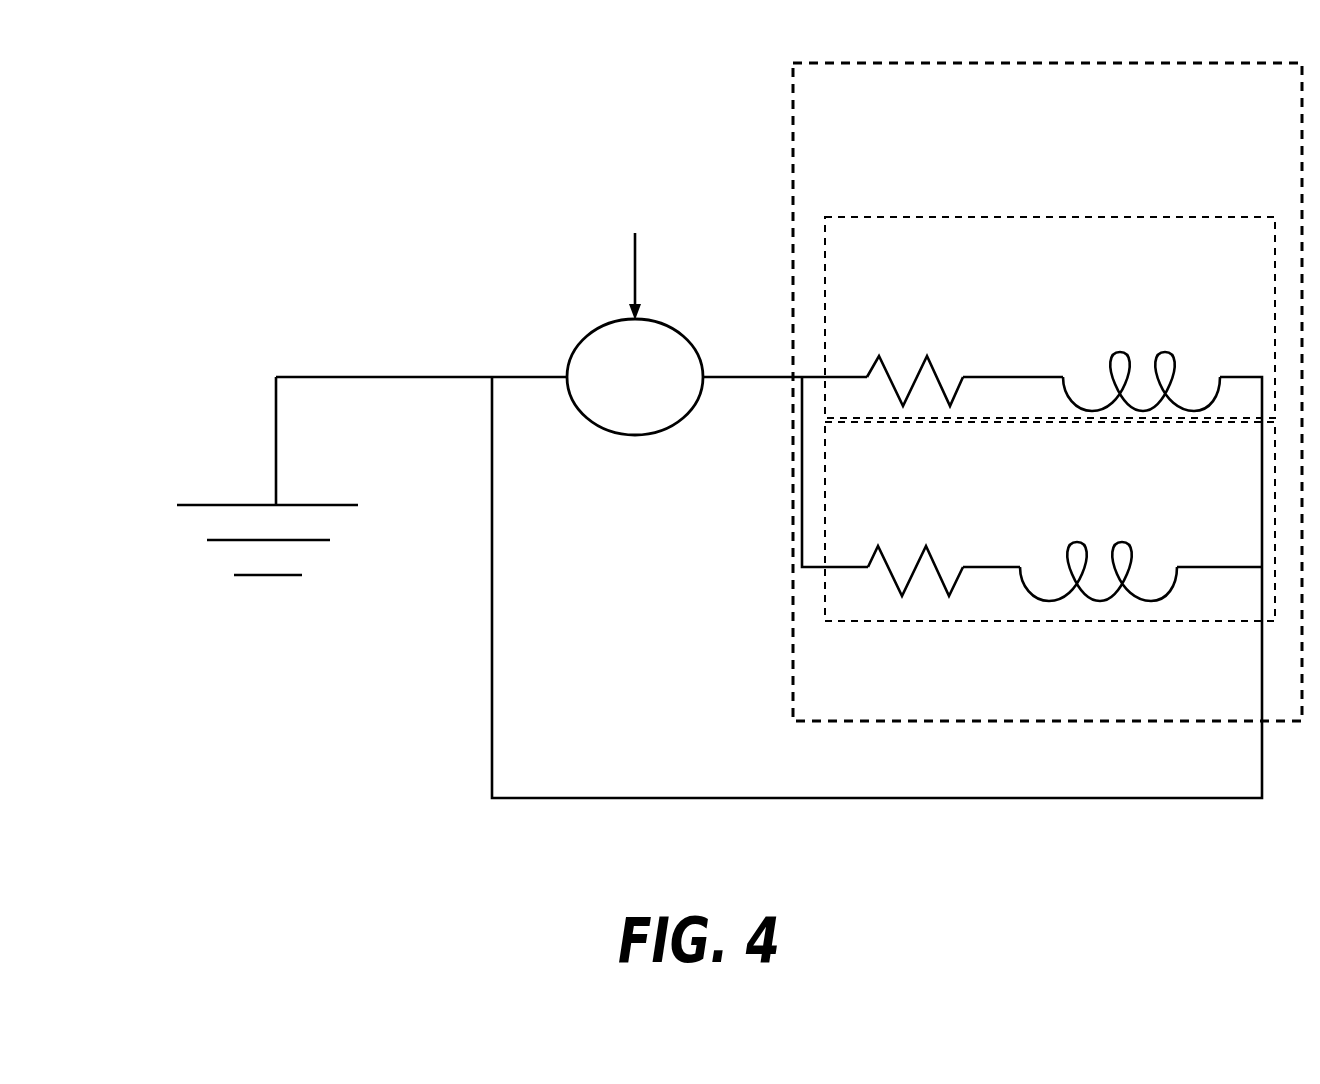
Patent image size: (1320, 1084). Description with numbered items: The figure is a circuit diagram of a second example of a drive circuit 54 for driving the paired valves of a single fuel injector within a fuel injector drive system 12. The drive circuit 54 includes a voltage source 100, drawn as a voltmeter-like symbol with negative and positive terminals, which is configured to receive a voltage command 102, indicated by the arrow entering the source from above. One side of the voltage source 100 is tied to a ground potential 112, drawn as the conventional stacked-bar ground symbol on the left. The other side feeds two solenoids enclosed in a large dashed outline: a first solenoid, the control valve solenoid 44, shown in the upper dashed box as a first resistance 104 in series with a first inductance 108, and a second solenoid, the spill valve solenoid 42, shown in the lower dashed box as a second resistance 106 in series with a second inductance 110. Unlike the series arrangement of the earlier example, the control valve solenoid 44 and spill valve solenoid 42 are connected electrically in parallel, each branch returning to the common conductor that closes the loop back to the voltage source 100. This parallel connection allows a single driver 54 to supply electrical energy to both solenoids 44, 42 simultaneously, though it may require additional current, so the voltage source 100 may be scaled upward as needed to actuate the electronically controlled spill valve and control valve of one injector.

The fuel injector drive system 12 is at (203, 226).
The drive circuit 54 is at (599, 122).
The voltage source 100 is at (593, 330).
The voltage command 102 is at (636, 263).
The ground potential 112 is at (199, 505).
The control valve solenoid 44 is at (921, 217).
The spill valve solenoid 42 is at (901, 621).
The first resistance 104 is at (933, 377).
The second resistance 106 is at (935, 567).
The first inductance 108 is at (1177, 373).
The second inductance 110 is at (1133, 565).